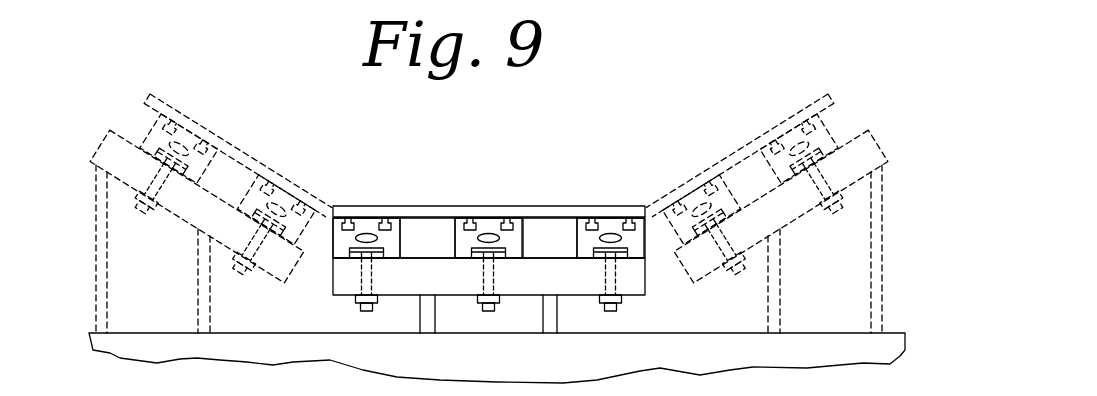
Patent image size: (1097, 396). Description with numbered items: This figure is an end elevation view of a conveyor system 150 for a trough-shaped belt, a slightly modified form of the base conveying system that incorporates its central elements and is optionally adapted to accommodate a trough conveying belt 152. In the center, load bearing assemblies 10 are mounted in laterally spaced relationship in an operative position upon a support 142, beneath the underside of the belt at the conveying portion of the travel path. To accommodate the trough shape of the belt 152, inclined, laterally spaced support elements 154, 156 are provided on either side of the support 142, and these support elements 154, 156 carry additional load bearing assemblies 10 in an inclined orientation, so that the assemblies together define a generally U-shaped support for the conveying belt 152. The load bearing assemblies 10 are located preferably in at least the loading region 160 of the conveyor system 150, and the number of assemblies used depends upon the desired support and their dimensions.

The load bearing assembly 10 is at (567, 229).
The support 142 is at (433, 280).
The conveyor system 150 is at (590, 156).
The trough conveying belt 152 is at (377, 205).
The support element 154 is at (855, 172).
The support element 156 is at (197, 208).
The loading region 160 is at (516, 167).